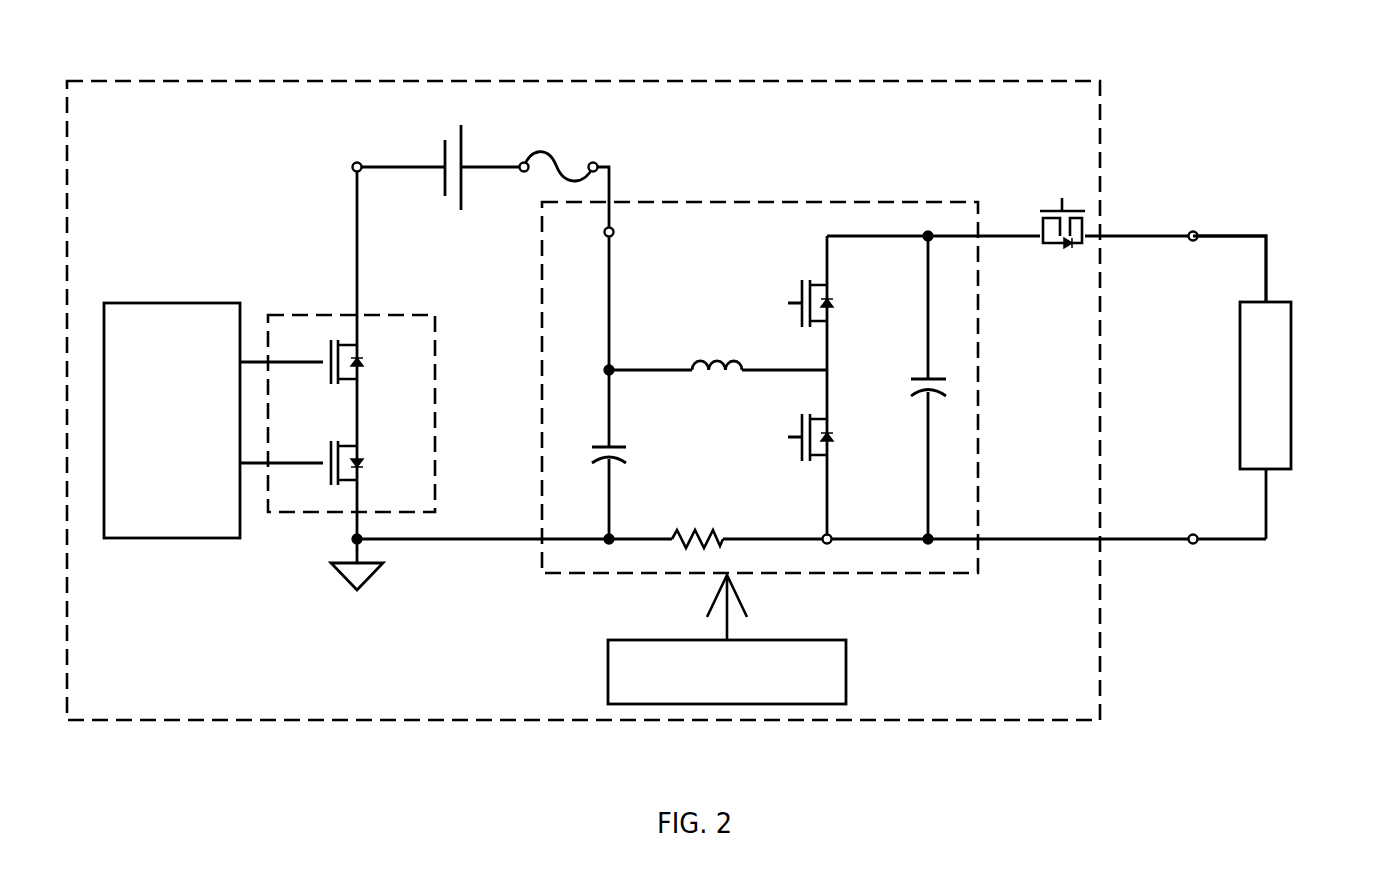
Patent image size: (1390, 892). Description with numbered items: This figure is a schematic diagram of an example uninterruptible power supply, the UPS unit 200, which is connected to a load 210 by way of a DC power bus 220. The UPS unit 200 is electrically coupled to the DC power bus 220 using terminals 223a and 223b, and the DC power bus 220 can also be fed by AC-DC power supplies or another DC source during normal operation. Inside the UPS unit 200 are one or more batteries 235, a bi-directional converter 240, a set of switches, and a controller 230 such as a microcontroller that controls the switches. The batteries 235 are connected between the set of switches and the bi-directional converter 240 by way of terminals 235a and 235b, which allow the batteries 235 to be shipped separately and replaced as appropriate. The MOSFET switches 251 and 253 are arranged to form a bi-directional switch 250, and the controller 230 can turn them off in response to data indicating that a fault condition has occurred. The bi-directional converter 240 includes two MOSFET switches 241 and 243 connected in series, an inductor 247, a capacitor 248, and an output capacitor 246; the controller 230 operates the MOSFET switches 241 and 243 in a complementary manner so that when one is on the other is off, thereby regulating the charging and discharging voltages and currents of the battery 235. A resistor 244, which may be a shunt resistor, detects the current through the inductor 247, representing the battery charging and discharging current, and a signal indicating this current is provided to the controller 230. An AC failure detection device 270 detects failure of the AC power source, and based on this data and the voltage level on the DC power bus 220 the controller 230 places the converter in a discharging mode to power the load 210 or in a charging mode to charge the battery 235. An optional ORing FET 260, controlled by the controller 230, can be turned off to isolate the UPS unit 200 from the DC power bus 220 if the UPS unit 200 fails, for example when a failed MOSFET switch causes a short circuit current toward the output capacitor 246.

The UPS unit 200 is at (178, 81).
The load 210 is at (1240, 358).
The DC power bus 220 is at (1290, 262).
The terminal 223a is at (1205, 222).
The terminal 223b is at (1187, 555).
The controller 230 is at (167, 303).
The battery 235 is at (426, 150).
The terminal 235a is at (344, 157).
The terminal 235b is at (520, 180).
The bi-directional converter 240 is at (842, 202).
The MOSFET switch 241 is at (854, 292).
The MOSFET switch 243 is at (768, 436).
The resistor 244 is at (726, 522).
The output capacitor 246 is at (962, 367).
The inductor 247 is at (708, 348).
The capacitor 248 is at (640, 461).
The bi-directional switch 250 is at (312, 315).
The MOSFET switch 251 is at (390, 336).
The MOSFET switch 253 is at (387, 458).
The ORing FET 260 is at (1030, 196).
The AC failure detection device 270 is at (846, 666).